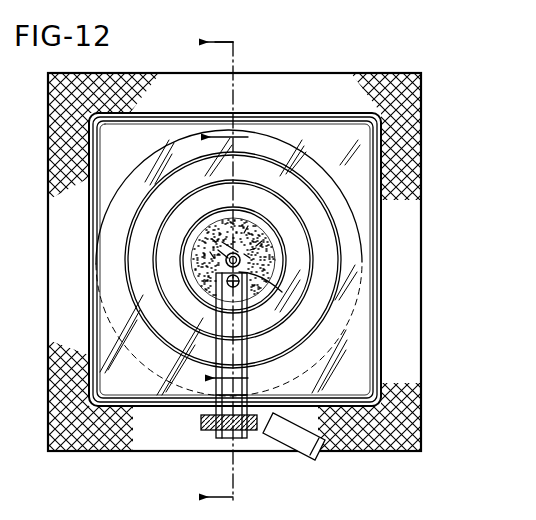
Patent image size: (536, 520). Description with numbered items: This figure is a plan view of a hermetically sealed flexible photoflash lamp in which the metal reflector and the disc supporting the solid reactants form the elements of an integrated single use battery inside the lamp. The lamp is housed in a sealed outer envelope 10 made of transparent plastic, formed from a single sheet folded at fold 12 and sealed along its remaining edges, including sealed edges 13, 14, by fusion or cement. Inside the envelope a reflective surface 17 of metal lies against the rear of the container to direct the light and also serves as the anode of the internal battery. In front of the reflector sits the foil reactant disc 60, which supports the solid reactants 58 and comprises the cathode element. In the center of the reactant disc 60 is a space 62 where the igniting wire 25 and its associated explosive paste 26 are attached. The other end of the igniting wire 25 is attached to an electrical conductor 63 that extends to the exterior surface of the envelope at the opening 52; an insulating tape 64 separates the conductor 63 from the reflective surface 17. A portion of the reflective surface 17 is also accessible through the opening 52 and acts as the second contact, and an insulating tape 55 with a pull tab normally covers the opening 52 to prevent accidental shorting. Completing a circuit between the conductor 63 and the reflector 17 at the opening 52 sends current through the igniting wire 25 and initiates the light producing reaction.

The sealed outer envelope 10 is at (364, 72).
The fold 12 is at (316, 72).
The sealed edge 13 is at (231, 271).
The sealed edge 14 is at (238, 258).
The reflective surface 17 is at (316, 154).
The igniting wire 25 is at (226, 263).
The explosive paste 26 is at (267, 287).
The opening 52 is at (200, 423).
The insulating tape 55 is at (311, 452).
The solid reactants 58 is at (213, 222).
The foil reactant disc 60 is at (280, 251).
The space 62 is at (222, 250).
The electrical conductor 63 is at (227, 327).
The insulating tape 64 is at (248, 326).